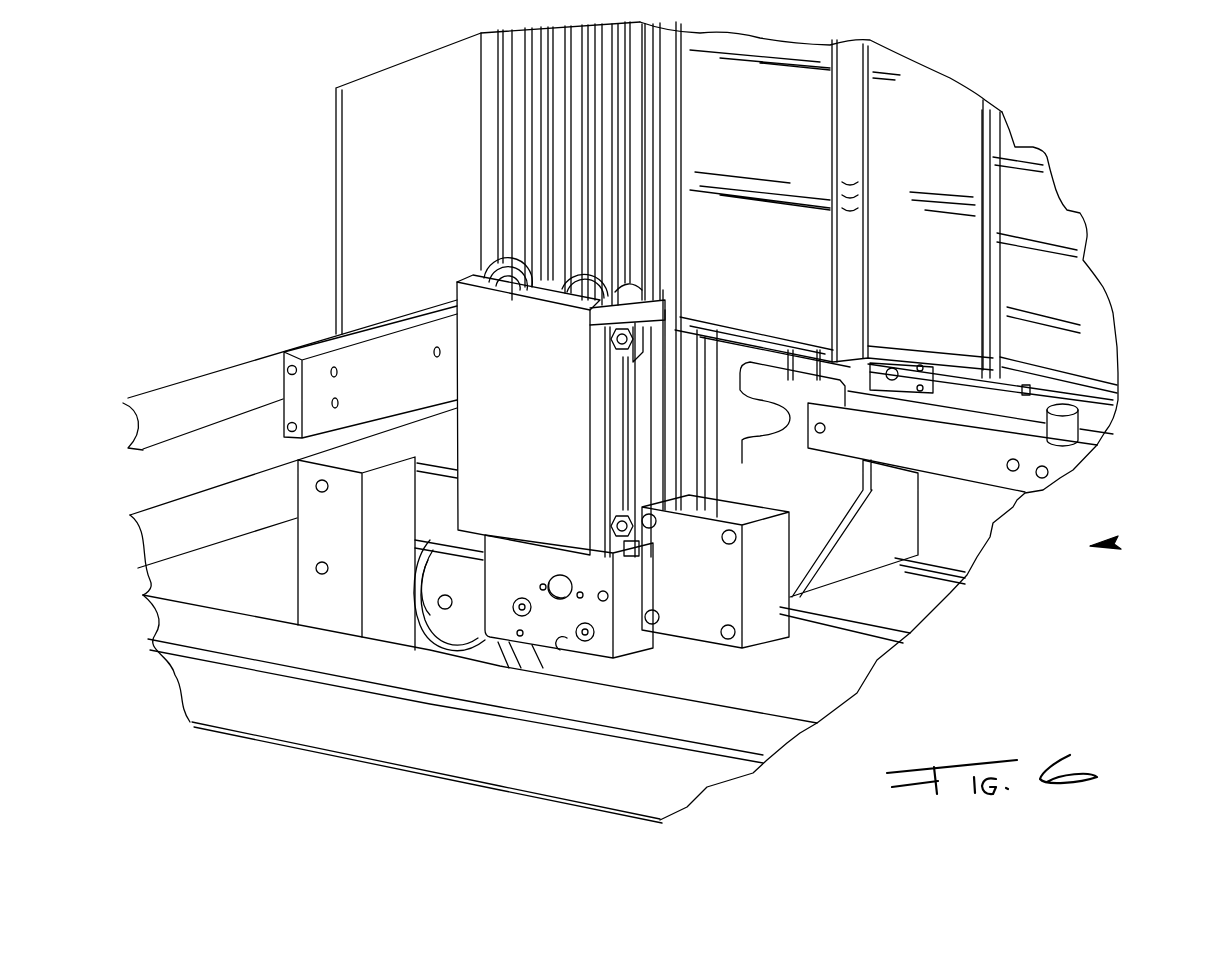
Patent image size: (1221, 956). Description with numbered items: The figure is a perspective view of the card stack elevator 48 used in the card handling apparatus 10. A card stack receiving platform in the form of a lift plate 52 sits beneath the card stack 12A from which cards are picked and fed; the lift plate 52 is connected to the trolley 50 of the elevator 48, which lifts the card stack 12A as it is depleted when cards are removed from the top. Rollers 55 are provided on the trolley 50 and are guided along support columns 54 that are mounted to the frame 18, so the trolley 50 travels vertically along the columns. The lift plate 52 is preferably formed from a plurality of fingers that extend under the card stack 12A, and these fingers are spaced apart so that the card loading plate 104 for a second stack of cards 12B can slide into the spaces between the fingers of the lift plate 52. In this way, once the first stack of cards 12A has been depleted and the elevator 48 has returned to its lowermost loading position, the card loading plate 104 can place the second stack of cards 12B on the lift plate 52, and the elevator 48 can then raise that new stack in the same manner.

The material handling apparatus 10 is at (1100, 543).
The card stack 12A is at (748, 258).
The second stack of cards 12B is at (1102, 362).
The frame 18 is at (284, 719).
The elevator 48 is at (552, 347).
The trolley 50 is at (478, 365).
The lift plate 52 is at (658, 315).
The support columns 54 is at (528, 193).
The rollers 55 is at (500, 303).
The card loading plate 104 is at (1098, 413).